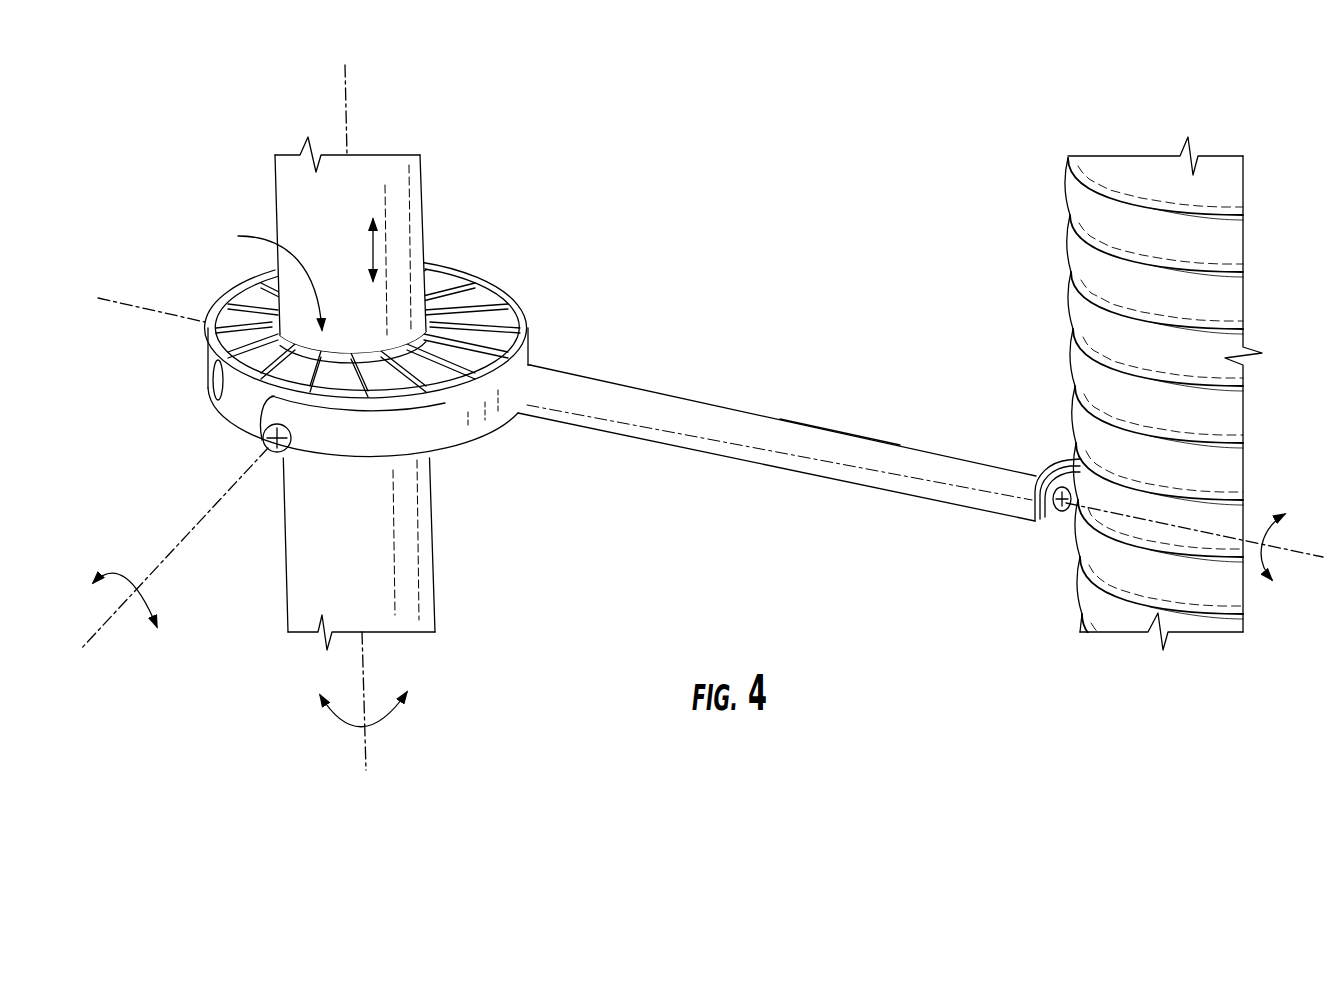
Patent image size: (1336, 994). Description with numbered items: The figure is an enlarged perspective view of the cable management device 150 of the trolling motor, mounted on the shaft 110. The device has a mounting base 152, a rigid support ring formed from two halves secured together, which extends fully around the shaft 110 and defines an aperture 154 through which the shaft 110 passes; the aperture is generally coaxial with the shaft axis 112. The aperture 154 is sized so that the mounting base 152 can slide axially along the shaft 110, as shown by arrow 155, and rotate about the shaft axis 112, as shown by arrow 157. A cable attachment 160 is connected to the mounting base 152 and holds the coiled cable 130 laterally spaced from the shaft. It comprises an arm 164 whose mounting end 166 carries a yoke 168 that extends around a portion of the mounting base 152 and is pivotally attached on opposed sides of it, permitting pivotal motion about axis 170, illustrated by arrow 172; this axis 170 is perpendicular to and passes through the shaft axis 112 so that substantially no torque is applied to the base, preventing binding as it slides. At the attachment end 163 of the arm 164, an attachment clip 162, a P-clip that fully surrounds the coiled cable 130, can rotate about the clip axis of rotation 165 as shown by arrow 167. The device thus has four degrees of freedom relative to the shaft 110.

The shaft 110 is at (298, 603).
The shaft axis 112 is at (367, 753).
The coiled cable 130 is at (1125, 172).
The cable management device 150 is at (190, 393).
The mounting base 152 is at (223, 295).
The aperture 154 is at (262, 276).
The arrow 155 is at (368, 247).
The arrow 157 is at (410, 708).
The cable attachment 160 is at (745, 438).
The attachment clip 162 is at (1060, 514).
The attachment end 163 is at (1018, 497).
The arm 164 is at (903, 472).
The clip axis of rotation 165 is at (1293, 557).
The mounting end 166 is at (528, 397).
The arrow 167 is at (1265, 577).
The yoke 168 is at (333, 448).
The axis 170 is at (188, 535).
The arrow 172 is at (115, 573).